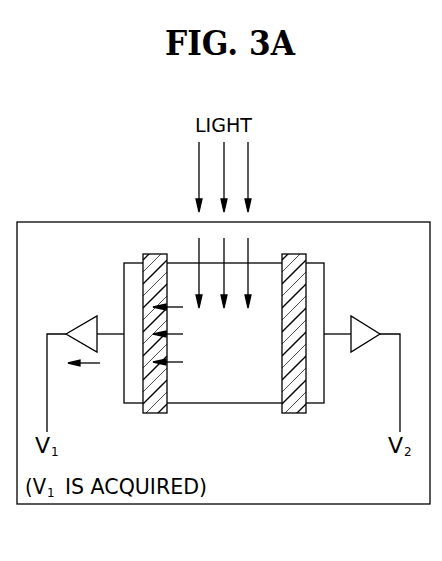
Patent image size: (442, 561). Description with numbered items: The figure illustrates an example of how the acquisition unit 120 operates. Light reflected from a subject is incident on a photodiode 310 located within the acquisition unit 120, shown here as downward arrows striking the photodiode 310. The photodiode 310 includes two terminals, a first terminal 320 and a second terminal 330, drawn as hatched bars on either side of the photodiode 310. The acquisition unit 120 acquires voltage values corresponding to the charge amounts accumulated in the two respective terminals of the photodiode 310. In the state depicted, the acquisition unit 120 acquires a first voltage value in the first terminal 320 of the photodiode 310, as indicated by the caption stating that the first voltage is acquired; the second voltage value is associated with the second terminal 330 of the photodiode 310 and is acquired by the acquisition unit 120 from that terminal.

The acquisition unit 120 is at (410, 206).
The photodiode 310 is at (219, 399).
The first terminal 320 is at (153, 413).
The second terminal 330 is at (293, 413).